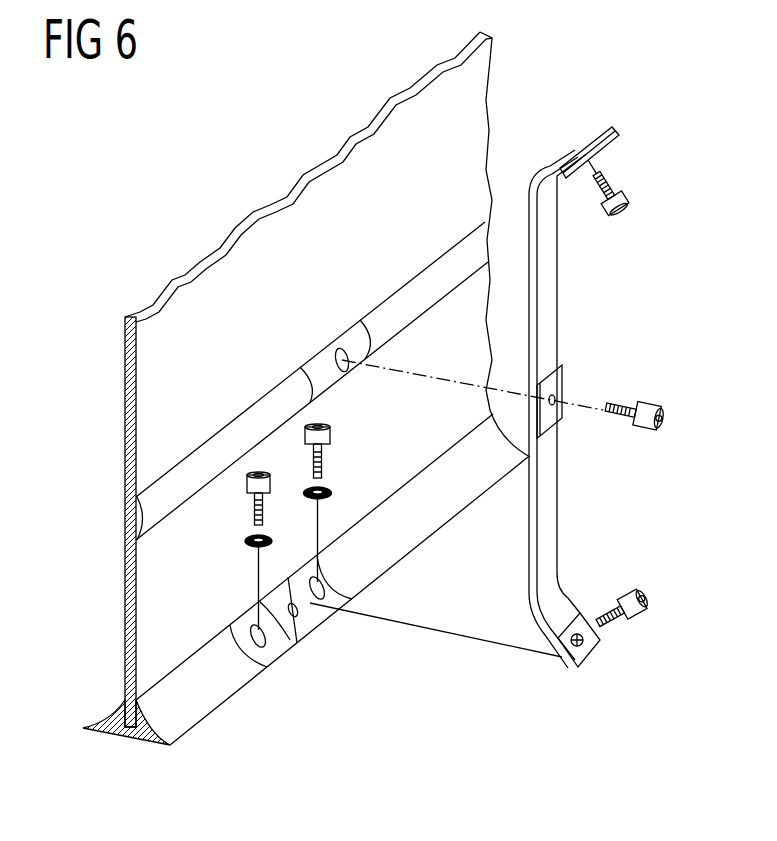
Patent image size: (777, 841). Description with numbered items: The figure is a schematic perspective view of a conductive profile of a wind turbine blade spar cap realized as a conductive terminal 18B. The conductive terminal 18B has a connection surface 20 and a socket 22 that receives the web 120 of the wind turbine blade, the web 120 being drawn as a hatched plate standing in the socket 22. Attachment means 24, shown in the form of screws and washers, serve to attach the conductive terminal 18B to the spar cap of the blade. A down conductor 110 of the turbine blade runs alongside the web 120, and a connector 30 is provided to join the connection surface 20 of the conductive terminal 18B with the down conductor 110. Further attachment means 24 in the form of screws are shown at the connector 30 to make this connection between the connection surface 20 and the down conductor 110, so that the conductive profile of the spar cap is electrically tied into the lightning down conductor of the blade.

The down conductor 110 is at (247, 432).
The web 120 is at (160, 593).
The socket 22 is at (122, 740).
The attachment means 24 is at (247, 490).
The conductive terminal 18B is at (267, 657).
The connection surface 20 is at (305, 627).
The connector 30 is at (593, 657).